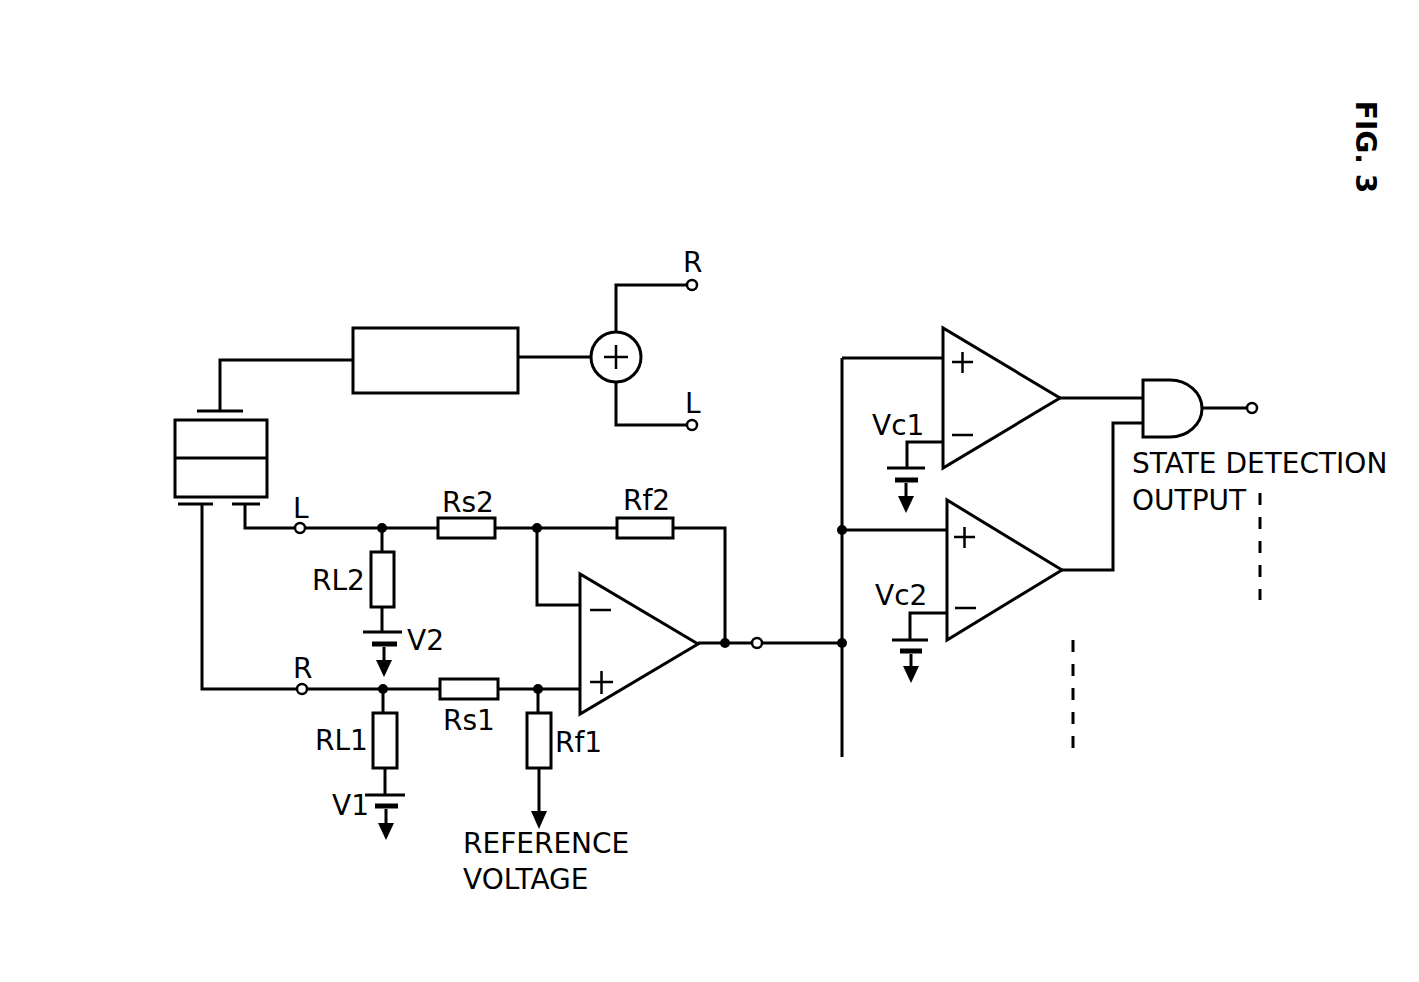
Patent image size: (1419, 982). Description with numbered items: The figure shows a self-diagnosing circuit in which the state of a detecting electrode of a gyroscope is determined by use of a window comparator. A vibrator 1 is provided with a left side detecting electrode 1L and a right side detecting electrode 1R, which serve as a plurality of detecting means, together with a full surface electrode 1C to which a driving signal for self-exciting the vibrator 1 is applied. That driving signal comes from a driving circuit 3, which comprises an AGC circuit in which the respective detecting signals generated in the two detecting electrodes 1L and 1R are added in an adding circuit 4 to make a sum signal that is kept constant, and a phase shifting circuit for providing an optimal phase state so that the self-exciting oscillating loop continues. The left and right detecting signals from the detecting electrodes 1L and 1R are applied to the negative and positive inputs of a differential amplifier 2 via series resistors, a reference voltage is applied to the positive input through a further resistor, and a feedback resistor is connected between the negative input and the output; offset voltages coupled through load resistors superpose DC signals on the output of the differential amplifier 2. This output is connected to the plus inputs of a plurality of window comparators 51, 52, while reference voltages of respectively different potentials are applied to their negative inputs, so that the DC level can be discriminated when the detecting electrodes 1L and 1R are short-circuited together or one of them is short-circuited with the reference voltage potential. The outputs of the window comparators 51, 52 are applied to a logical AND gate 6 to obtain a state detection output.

The vibrator 1 is at (278, 449).
The full surface electrode 1C is at (210, 411).
The right side detecting electrode 1R is at (197, 507).
The left side detecting electrode 1L is at (248, 507).
The differential amplifier 2 is at (633, 627).
The driving circuit 3 is at (433, 330).
The adding circuit 4 is at (642, 357).
The window comparator 51 is at (997, 381).
The window comparator 52 is at (1000, 553).
The logical AND gate 6 is at (1170, 390).